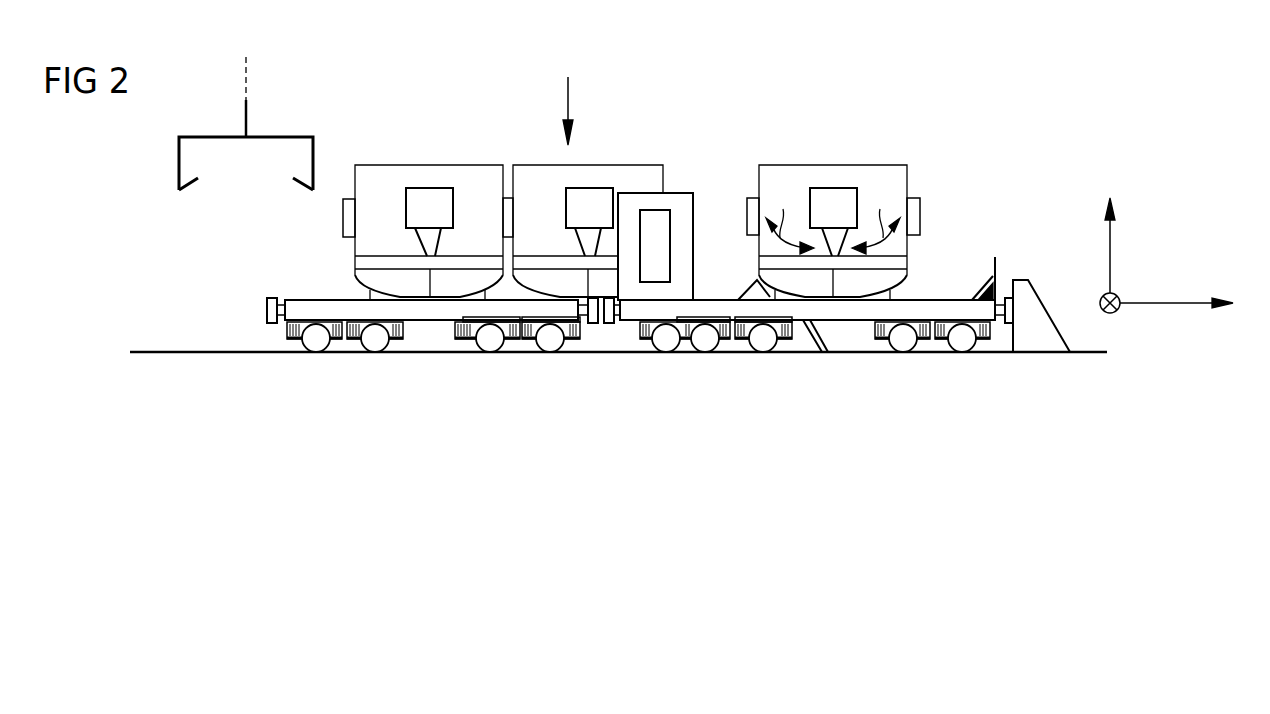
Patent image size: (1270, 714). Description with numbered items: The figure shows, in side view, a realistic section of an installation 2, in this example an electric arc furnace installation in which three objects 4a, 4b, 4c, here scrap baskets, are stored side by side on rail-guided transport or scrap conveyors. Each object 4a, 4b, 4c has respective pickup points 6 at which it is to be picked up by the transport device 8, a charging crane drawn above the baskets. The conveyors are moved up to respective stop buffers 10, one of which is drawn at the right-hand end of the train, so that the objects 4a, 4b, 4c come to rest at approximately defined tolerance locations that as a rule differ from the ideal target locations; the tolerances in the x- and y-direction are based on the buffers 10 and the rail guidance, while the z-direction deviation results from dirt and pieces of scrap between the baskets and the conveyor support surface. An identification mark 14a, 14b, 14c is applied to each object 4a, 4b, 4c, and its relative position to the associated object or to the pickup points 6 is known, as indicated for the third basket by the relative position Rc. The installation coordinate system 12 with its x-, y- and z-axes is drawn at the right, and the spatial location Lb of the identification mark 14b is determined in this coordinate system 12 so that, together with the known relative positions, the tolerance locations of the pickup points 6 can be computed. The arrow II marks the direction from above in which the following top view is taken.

The installation 2 is at (1180, 150).
The object 4a is at (430, 170).
The object 4b is at (588, 170).
The object 4c is at (833, 170).
The pickup points 6 is at (343, 216).
The transport device 8 is at (275, 137).
The stop buffers 10 is at (1037, 338).
The installation coordinate system 12 is at (1158, 300).
The identification mark 14a is at (427, 237).
The identification mark 14b is at (587, 245).
The identification mark 14c is at (832, 236).
The spatial location Lb is at (600, 278).
The relative position Rc is at (833, 218).
The arrow II is at (575, 111).